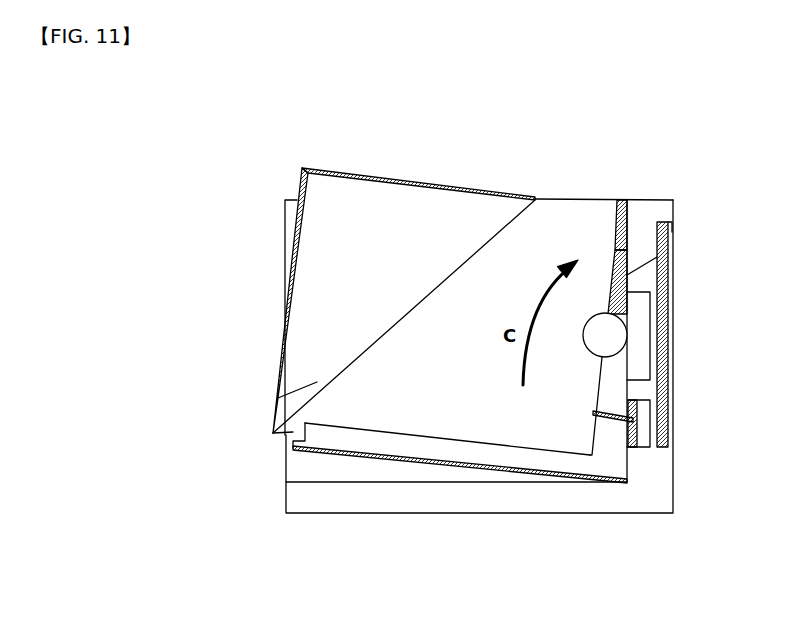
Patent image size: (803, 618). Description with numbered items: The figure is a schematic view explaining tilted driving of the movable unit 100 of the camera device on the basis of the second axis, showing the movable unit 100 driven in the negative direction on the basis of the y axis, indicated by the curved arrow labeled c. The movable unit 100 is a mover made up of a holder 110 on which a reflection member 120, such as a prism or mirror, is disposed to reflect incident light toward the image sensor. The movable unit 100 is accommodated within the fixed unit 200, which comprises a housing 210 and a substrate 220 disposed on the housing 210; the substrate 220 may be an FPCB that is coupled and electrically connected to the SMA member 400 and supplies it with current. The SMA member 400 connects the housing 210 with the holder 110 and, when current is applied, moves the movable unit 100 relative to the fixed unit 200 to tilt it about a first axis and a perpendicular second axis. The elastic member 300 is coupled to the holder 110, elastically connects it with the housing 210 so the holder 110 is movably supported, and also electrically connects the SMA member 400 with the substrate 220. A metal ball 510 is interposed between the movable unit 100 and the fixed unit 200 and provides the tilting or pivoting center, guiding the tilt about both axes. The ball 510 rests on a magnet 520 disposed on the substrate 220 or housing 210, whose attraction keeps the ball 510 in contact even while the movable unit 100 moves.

The movable unit 100 is at (397, 311).
The holder 110 is at (342, 402).
The reflection member 120 is at (313, 322).
The fixed unit 200 is at (525, 392).
The housing 210 is at (622, 510).
The substrate 220 is at (672, 422).
The elastic member 300 is at (370, 457).
The SMA member 400 is at (625, 205).
The ball 510 is at (607, 330).
The magnet 520 is at (643, 347).